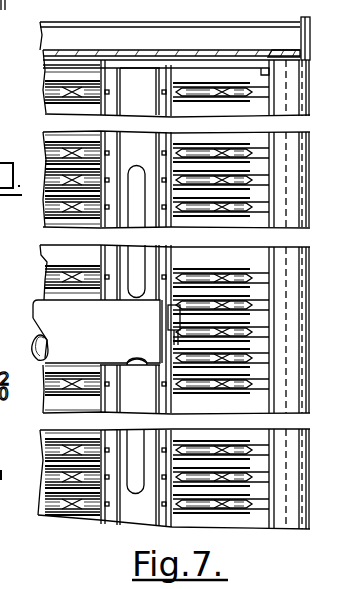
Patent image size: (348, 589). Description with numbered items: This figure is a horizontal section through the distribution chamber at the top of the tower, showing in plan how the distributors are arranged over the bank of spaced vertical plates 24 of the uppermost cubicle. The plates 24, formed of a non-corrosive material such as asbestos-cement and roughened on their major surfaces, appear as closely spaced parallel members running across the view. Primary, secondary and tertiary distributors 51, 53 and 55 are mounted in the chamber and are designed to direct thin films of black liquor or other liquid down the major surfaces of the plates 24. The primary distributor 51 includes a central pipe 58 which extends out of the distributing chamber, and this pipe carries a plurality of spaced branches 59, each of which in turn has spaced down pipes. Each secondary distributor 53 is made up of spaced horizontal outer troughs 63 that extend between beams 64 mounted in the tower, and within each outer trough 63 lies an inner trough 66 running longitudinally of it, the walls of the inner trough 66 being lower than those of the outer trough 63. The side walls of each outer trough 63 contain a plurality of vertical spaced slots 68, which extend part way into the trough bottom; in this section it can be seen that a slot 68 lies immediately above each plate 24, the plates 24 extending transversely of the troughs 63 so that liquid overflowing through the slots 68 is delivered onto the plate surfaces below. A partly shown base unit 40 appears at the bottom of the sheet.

The vertical plates 24 is at (42, 278).
The base unit 40 is at (120, 588).
The primary distributor 51 is at (40, 316).
The secondary distributor 53 is at (141, 83).
The tertiary distributor 55 is at (45, 258).
The central pipe 58 is at (50, 333).
The branches 59 is at (134, 172).
The outer troughs 63 is at (96, 68).
The beams 64 is at (213, 61).
The inner trough 66 is at (123, 73).
The slots 68 is at (104, 527).